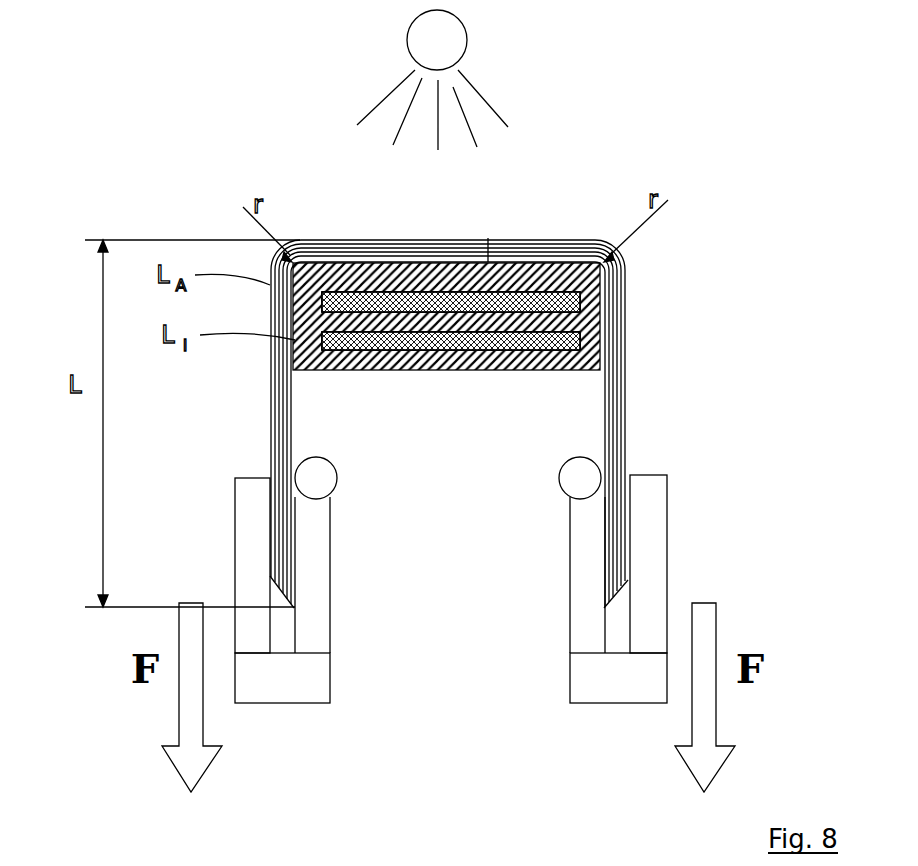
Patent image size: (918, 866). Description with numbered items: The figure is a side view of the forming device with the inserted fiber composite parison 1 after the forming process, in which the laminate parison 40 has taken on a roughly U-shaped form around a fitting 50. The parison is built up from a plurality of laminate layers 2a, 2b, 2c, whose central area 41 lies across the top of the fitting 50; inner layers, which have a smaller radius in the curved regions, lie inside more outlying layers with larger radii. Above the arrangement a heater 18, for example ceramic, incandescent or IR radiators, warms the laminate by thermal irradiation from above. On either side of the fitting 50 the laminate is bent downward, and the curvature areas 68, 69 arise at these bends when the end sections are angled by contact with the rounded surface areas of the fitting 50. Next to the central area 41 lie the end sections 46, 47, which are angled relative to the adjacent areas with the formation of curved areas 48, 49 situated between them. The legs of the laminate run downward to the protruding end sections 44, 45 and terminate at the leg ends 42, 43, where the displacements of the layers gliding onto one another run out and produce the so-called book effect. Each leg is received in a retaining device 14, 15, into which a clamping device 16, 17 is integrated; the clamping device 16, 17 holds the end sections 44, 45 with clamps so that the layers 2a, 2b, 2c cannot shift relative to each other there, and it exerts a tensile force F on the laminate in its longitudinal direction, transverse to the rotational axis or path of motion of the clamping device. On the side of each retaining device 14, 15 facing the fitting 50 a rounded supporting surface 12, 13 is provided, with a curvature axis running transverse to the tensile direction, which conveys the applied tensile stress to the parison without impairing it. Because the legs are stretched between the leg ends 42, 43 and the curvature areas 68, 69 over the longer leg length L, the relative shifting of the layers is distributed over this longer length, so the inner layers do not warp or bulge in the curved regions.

The fiber composite parison 1 is at (132, 160).
The heater 18 is at (430, 33).
The fitting 50 is at (450, 355).
The laminate parison 40 is at (447, 398).
The central area 41 is at (450, 240).
The laminate layer 2a is at (607, 312).
The laminate layer 2b is at (618, 345).
The laminate layer 2c is at (630, 385).
The curvature area 68 is at (290, 258).
The curvature area 69 is at (625, 258).
The end section 46 is at (263, 388).
The curved area 48 is at (263, 437).
The end section 47 is at (633, 425).
The curved area 49 is at (637, 455).
The retaining device 14 is at (258, 564).
The retaining device 15 is at (653, 571).
The clamping device 16 is at (230, 530).
The clamping device 17 is at (668, 530).
The supporting surface 12 is at (330, 450).
The supporting surface 13 is at (565, 450).
The leg end 42 is at (290, 590).
The leg end 43 is at (617, 595).
The protruding end section 44 is at (290, 578).
The protruding end section 45 is at (612, 552).